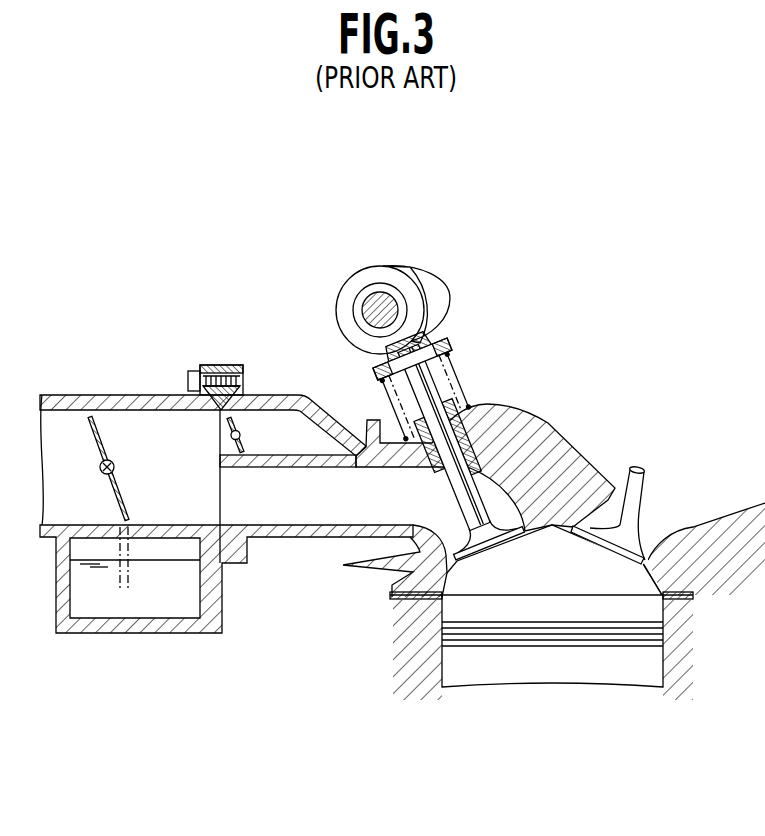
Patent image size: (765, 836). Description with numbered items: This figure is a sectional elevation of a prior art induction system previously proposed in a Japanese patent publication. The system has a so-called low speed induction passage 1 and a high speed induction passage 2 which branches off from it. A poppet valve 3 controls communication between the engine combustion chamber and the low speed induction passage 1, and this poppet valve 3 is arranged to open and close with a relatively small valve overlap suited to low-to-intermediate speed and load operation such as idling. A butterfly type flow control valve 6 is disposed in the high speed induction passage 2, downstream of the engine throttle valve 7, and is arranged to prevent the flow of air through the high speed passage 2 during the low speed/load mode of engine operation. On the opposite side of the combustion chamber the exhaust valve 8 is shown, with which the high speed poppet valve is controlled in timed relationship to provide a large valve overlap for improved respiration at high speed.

The low speed induction passage 1 is at (312, 512).
The high speed induction passage 2 is at (283, 437).
The poppet valve 3 is at (460, 500).
The butterfly type flow control valve 6 is at (246, 438).
The engine throttle valve 7 is at (100, 448).
The exhaust valve 8 is at (634, 500).